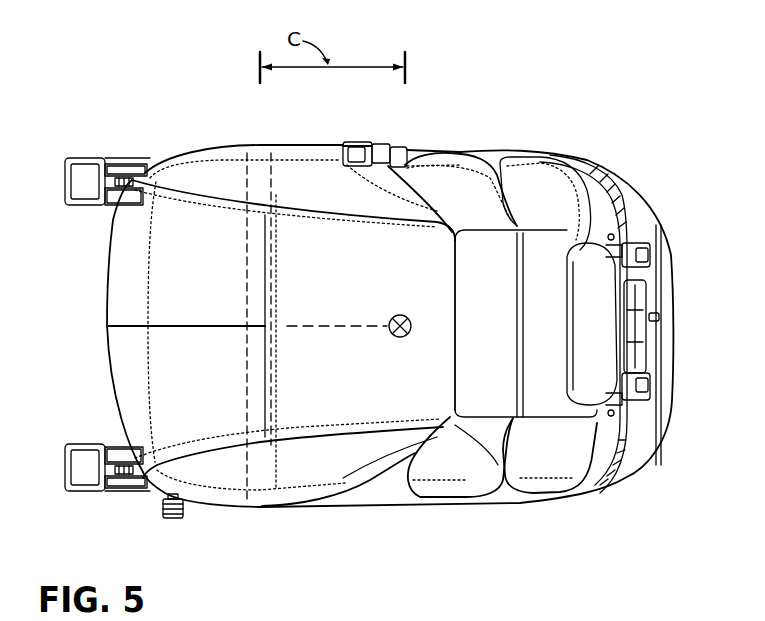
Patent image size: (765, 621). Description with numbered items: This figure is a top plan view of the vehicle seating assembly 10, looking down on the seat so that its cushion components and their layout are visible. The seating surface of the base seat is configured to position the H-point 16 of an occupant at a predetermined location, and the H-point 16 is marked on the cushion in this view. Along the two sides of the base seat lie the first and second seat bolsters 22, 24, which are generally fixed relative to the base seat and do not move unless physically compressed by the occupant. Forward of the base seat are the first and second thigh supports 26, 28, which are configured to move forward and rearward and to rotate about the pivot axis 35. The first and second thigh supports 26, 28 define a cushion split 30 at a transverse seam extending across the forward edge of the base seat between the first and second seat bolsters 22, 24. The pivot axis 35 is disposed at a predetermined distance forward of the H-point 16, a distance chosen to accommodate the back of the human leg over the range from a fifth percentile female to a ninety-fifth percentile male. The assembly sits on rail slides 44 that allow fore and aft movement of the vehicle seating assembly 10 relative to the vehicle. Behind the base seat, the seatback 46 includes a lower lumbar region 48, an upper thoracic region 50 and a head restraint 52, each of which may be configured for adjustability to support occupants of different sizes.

The vehicle seating assembly 10 is at (646, 133).
The H-point 16 is at (400, 313).
The first seat bolster 22 is at (273, 178).
The second seat bolster 24 is at (274, 466).
The first thigh support 26 is at (130, 270).
The second thigh support 28 is at (130, 384).
The cushion split 30 is at (114, 327).
The pivot axis 35 is at (246, 190).
The rail slides 44 is at (113, 166).
The seatback 46 is at (527, 190).
The lower lumbar region 48 is at (483, 337).
The upper thoracic region 50 is at (538, 337).
The head restraint 52 is at (594, 272).